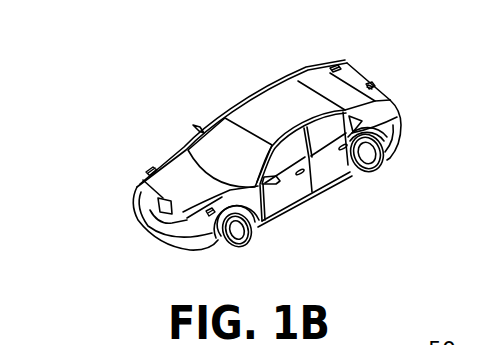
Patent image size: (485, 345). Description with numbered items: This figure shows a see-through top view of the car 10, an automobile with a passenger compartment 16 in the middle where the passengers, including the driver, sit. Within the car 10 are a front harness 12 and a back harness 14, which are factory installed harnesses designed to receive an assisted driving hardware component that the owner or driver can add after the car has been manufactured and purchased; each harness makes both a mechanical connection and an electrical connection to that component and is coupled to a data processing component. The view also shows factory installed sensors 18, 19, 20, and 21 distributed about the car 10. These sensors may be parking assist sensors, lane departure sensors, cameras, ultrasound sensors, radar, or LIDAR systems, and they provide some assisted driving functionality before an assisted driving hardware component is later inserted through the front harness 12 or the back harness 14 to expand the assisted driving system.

The car 10 is at (176, 92).
The front harness 12 is at (148, 222).
The back harness 14 is at (377, 86).
The passenger compartment 16 is at (278, 100).
The factory installed sensor 18 is at (147, 173).
The factory installed sensor 19 is at (212, 224).
The factory installed sensor 20 is at (335, 70).
The factory installed sensor 21 is at (397, 105).